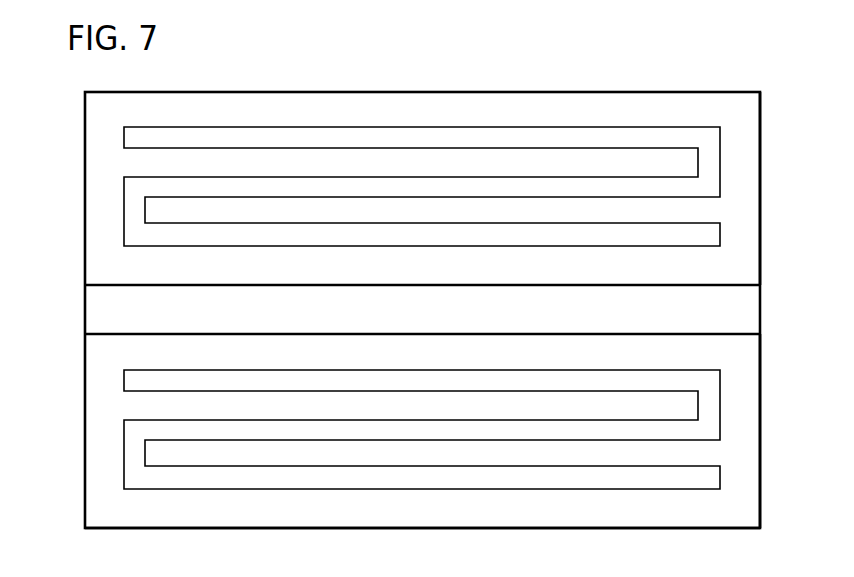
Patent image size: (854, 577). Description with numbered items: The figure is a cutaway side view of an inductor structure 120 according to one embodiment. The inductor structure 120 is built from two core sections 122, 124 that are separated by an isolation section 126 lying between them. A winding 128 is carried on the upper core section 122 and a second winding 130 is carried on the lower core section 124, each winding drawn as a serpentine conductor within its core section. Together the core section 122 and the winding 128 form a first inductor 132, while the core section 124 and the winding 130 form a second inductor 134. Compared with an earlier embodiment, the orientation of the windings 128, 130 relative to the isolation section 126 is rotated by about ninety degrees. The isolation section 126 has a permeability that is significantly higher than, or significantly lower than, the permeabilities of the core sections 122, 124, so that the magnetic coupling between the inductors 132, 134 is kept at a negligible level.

The inductor structure 120 is at (490, 57).
The core section 122 is at (85, 202).
The core section 124 is at (85, 450).
The isolation section 126 is at (85, 312).
The winding 128 is at (124, 138).
The winding 130 is at (124, 381).
The inductor 132 is at (780, 197).
The inductor 134 is at (780, 439).